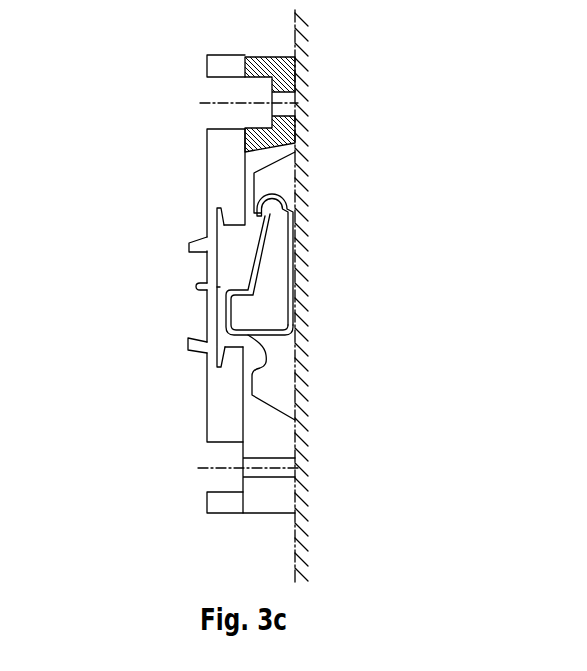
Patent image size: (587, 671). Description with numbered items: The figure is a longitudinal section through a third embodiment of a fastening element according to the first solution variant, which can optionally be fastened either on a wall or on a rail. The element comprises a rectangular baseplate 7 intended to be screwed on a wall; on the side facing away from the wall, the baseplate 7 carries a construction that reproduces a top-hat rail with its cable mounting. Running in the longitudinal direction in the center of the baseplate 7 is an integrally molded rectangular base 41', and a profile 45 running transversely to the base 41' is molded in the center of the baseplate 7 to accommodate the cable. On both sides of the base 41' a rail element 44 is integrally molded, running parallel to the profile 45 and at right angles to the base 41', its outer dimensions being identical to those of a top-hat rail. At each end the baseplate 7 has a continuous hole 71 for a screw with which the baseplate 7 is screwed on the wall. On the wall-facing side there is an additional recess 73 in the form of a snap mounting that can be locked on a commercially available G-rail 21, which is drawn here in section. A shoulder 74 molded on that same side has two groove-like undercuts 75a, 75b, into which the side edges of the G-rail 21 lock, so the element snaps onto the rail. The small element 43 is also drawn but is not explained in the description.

The baseplate 7 is at (280, 442).
The G-rail 21 is at (298, 280).
The base 41' is at (147, 354).
The nub 43 is at (196, 287).
The rail element 44 is at (212, 212).
The profile 45 is at (189, 244).
The continuous hole 71 is at (232, 97).
The recess 73 is at (280, 369).
The shoulder 74 is at (247, 245).
The groove-like undercut 75a is at (272, 200).
The groove-like undercut 75b is at (230, 300).